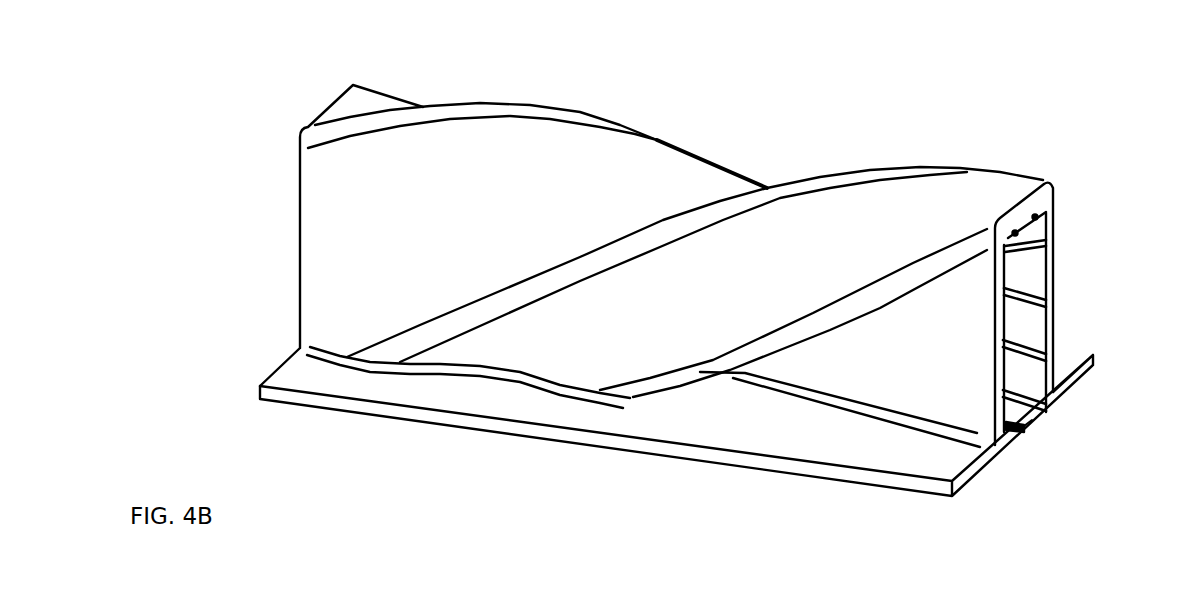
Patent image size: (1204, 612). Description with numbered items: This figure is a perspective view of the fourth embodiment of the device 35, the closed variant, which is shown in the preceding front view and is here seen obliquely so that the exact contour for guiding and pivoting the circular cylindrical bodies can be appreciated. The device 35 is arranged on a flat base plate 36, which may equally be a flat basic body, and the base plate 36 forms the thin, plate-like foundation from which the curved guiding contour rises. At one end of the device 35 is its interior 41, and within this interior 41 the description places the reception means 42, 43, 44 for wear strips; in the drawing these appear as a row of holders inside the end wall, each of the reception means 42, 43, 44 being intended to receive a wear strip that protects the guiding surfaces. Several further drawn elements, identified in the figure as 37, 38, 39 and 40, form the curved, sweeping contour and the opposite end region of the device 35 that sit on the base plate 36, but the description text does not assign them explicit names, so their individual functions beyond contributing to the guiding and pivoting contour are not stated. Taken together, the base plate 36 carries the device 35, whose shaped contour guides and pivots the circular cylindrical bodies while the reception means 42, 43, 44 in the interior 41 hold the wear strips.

The device 35 is at (1133, 166).
The base plate 36 is at (915, 462).
The first curved vane 37 is at (663, 155).
The second curved vane 38 is at (825, 207).
The third curved vane 39 is at (862, 355).
The left end wall 40 is at (402, 103).
The interior 41 is at (1047, 220).
The reception means 42 is at (1047, 243).
The reception means 43 is at (1015, 231).
The reception means 44 is at (1030, 430).